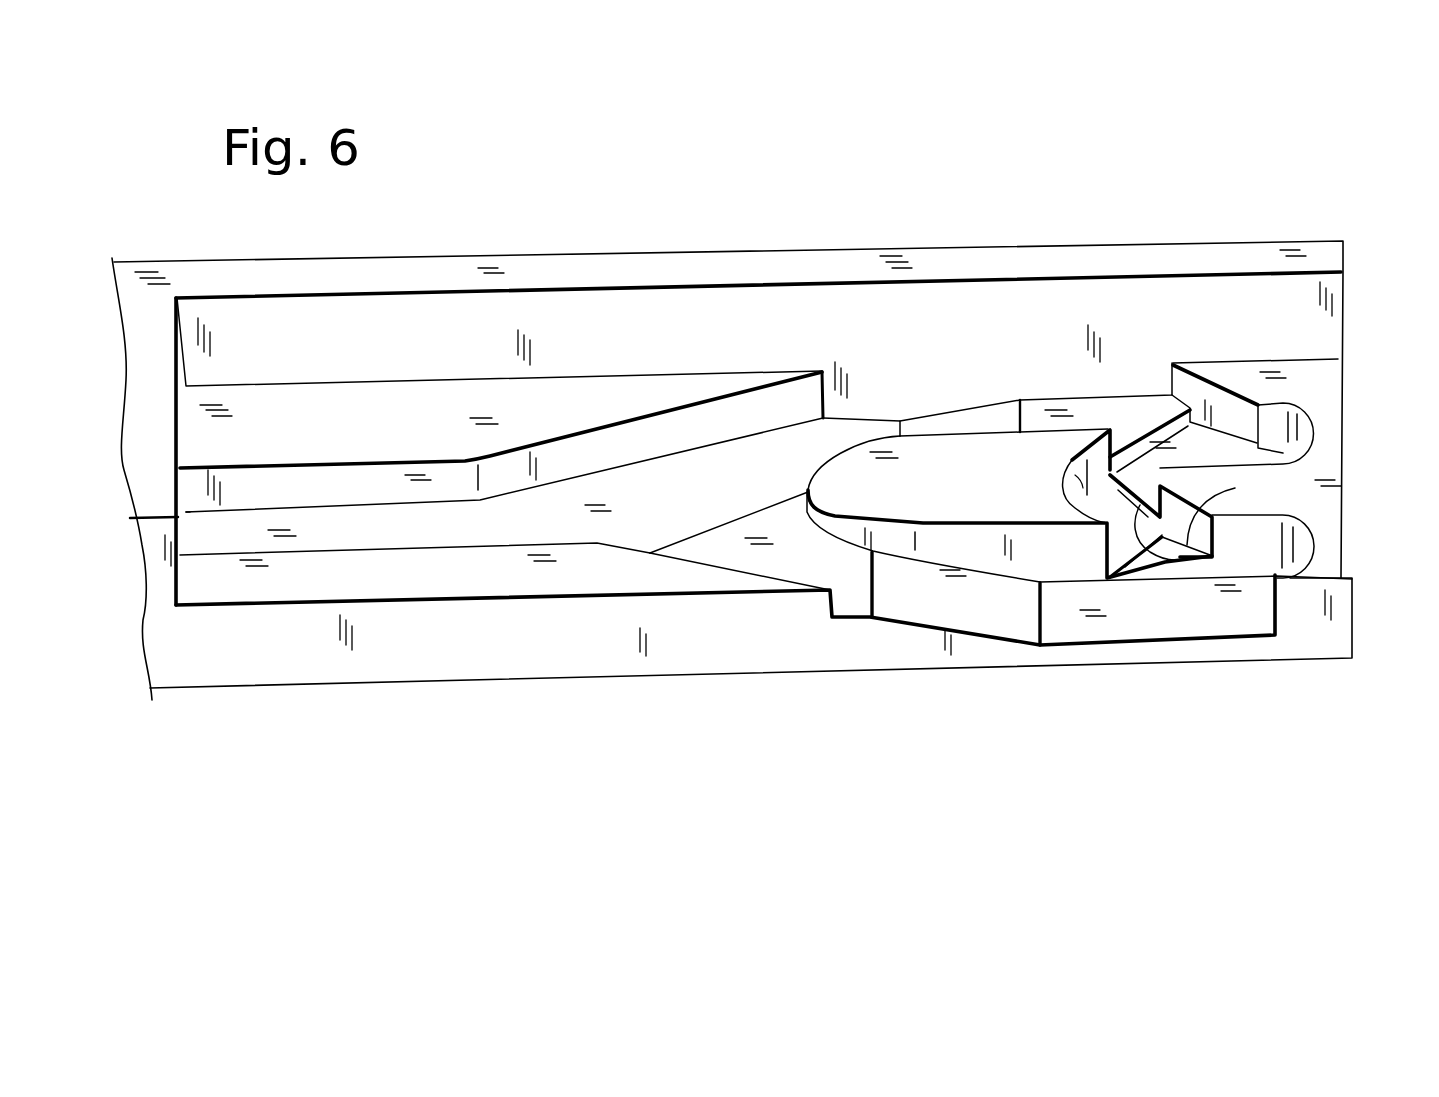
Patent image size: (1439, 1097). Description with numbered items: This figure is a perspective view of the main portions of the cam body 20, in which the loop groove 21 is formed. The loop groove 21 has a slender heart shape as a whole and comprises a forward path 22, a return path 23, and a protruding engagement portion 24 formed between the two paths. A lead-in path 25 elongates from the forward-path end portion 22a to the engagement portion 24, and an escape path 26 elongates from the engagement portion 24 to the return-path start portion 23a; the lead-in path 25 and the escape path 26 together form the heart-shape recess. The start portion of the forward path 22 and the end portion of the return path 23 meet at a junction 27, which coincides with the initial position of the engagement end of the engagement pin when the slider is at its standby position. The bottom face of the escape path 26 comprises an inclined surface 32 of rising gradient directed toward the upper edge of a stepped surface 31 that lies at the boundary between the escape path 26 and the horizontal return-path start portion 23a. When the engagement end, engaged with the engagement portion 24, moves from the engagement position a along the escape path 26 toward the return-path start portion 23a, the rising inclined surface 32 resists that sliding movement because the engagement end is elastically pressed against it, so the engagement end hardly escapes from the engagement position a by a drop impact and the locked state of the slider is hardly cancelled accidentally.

The cam body 20 is at (305, 672).
The loop groove 21 is at (740, 456).
The forward path 22 is at (1047, 410).
The forward-path end portion 22a is at (1275, 456).
The return path 23 is at (855, 602).
The return-path start portion 23a is at (1258, 614).
The protruding engagement portion 24 is at (955, 452).
The lead-in path 25 is at (1162, 435).
The escape path 26 is at (1130, 562).
The junction 27 is at (325, 525).
The stepped surface 31 is at (1187, 570).
The inclined surface 32 is at (1180, 496).
The engagement position a is at (1067, 470).